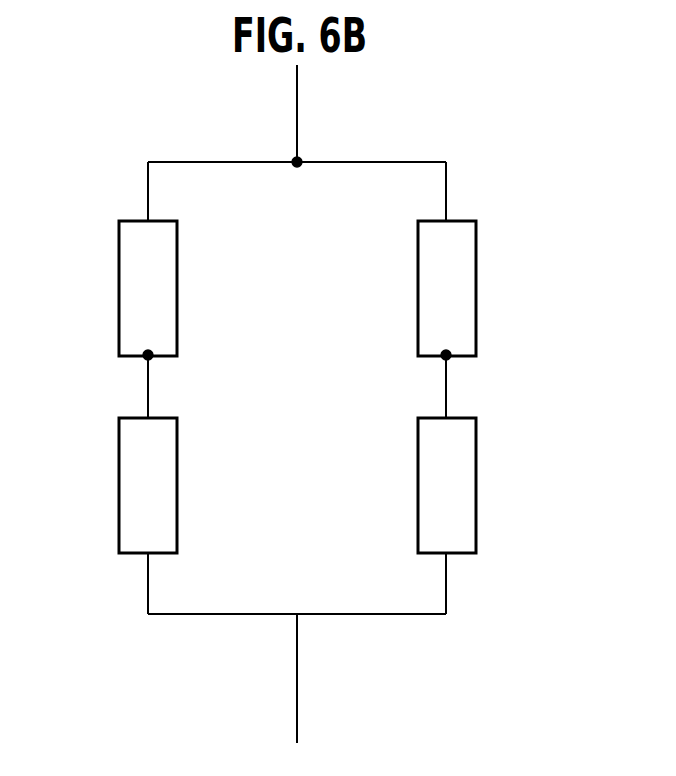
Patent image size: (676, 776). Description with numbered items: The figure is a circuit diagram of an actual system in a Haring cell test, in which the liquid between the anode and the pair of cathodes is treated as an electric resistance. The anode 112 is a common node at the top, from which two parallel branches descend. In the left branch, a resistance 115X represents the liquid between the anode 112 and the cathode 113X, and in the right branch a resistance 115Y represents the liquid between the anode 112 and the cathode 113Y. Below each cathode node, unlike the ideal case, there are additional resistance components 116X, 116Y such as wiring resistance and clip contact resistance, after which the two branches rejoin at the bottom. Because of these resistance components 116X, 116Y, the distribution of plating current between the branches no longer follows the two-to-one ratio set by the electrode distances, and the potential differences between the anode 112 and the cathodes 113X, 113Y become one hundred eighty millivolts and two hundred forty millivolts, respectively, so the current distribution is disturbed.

The anode 112 is at (297, 162).
The resistance 115X is at (119, 292).
The resistance 115Y is at (418, 289).
The cathode 113X is at (148, 356).
The cathode 113Y is at (446, 356).
The resistance component 116X is at (119, 490).
The resistance component 116Y is at (418, 486).